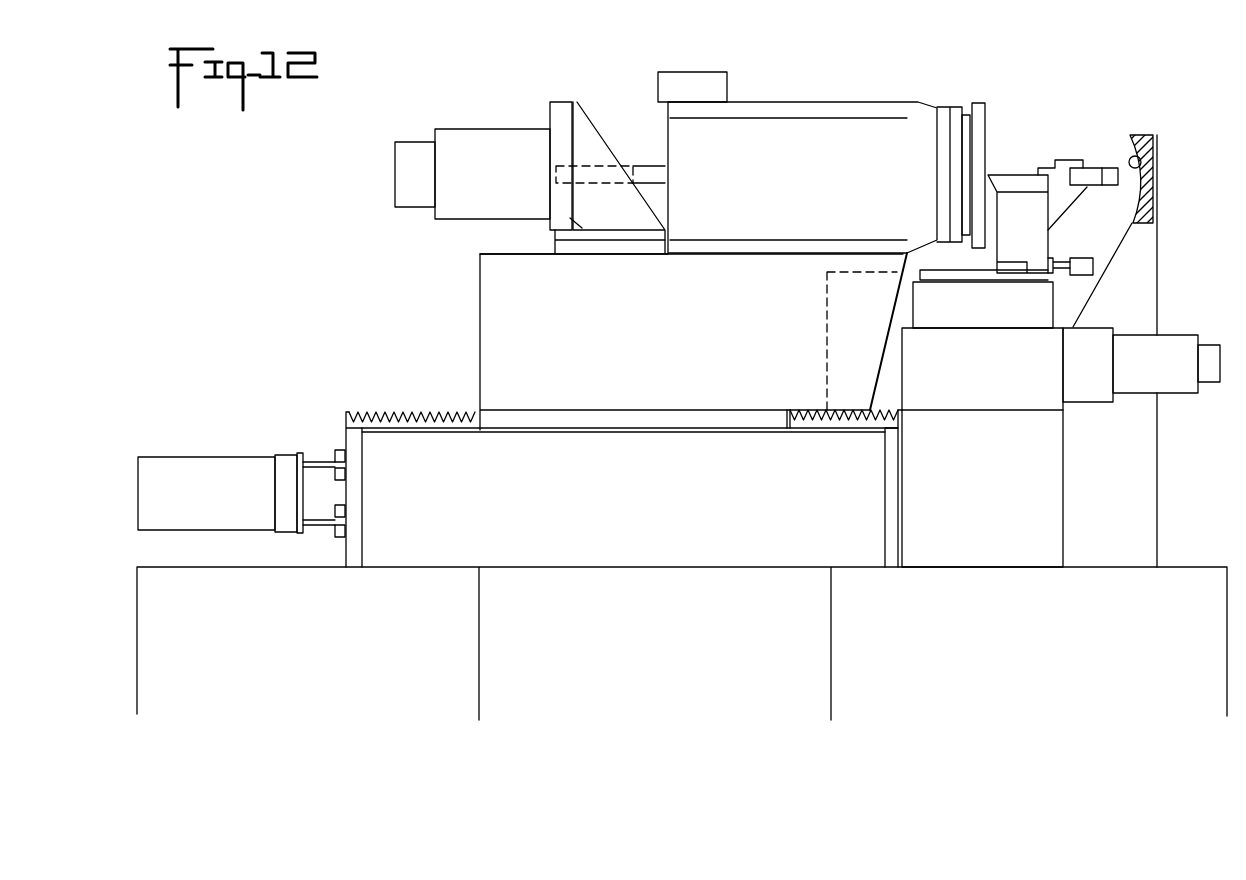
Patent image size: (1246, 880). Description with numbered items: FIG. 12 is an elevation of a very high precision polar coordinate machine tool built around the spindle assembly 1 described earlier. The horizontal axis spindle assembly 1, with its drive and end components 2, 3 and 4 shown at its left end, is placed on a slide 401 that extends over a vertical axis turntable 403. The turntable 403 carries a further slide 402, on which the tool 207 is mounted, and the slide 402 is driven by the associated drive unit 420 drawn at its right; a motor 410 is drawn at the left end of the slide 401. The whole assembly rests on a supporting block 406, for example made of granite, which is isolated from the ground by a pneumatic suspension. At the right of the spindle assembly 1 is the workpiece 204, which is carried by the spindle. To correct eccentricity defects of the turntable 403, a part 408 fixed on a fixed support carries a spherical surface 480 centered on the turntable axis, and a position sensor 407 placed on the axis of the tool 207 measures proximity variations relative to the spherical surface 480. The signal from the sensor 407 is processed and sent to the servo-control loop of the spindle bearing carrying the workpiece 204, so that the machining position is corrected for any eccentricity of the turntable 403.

The spindle assembly 1 is at (822, 101).
The drive motor 2 is at (486, 142).
The support bracket 3 is at (630, 152).
The motor end cap 4 is at (405, 150).
The workpiece 204 is at (978, 112).
The tool 207 is at (1013, 182).
The slide 401 is at (613, 423).
The slide 402 is at (1097, 342).
The turntable 403 is at (970, 283).
The supporting block 406 is at (1178, 578).
The position sensor 407 is at (1105, 172).
The part 408 is at (1145, 203).
The feed motor 410 is at (198, 473).
The feed drive 420 is at (1177, 345).
The spherical surface 480 is at (1145, 160).